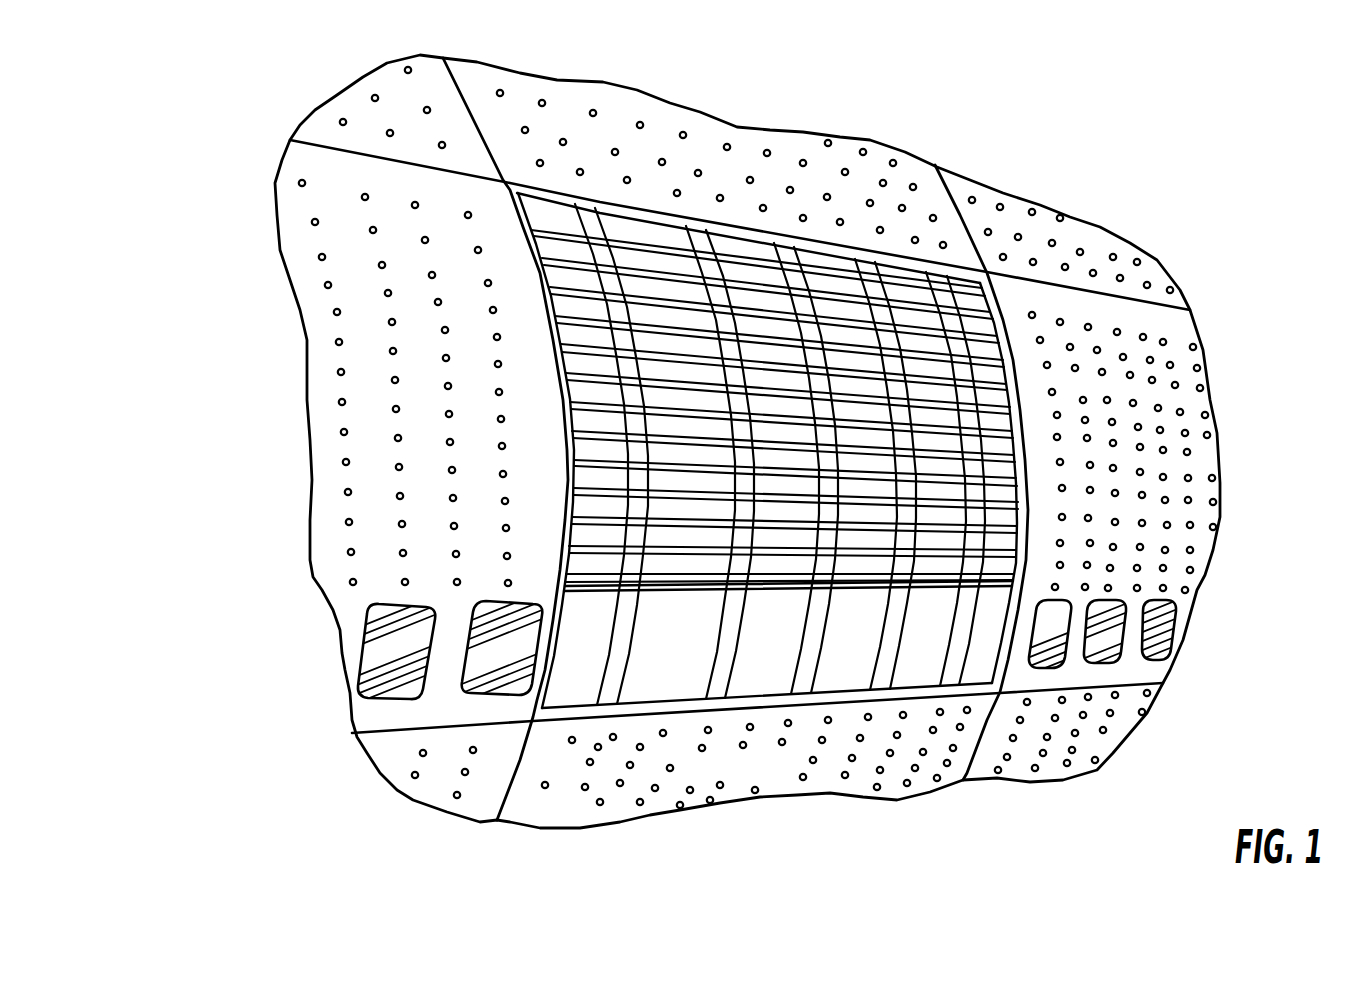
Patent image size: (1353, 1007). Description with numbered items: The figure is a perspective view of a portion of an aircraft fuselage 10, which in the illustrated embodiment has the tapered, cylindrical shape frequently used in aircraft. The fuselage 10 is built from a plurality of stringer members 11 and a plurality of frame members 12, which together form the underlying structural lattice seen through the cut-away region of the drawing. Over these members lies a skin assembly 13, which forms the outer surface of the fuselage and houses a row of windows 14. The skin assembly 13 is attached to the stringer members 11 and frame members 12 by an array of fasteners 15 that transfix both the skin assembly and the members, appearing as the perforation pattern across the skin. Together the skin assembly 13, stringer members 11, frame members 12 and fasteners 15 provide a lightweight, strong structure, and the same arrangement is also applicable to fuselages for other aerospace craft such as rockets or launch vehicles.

The aircraft fuselage 10 is at (1193, 168).
The stringer member 11 is at (988, 376).
The frame member 12 is at (853, 260).
The skin assembly 13 is at (1197, 425).
The window 14 is at (386, 670).
The fastener 15 is at (947, 766).